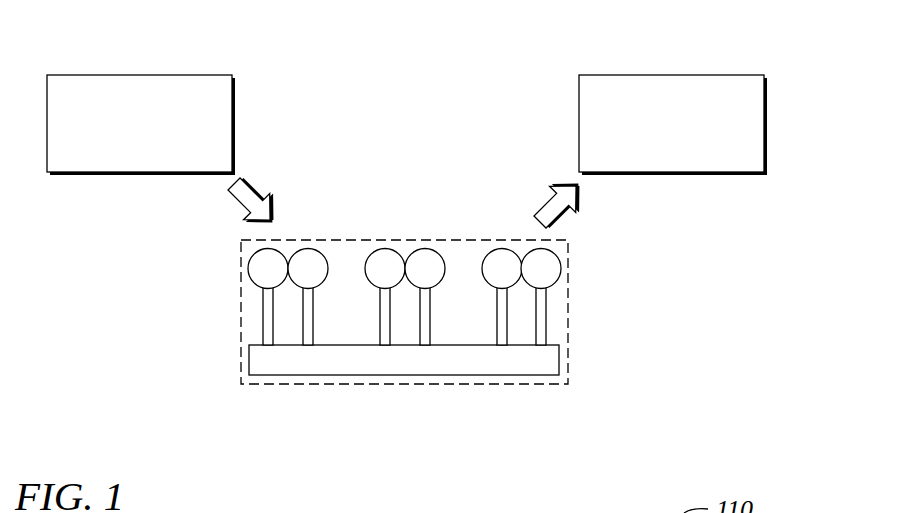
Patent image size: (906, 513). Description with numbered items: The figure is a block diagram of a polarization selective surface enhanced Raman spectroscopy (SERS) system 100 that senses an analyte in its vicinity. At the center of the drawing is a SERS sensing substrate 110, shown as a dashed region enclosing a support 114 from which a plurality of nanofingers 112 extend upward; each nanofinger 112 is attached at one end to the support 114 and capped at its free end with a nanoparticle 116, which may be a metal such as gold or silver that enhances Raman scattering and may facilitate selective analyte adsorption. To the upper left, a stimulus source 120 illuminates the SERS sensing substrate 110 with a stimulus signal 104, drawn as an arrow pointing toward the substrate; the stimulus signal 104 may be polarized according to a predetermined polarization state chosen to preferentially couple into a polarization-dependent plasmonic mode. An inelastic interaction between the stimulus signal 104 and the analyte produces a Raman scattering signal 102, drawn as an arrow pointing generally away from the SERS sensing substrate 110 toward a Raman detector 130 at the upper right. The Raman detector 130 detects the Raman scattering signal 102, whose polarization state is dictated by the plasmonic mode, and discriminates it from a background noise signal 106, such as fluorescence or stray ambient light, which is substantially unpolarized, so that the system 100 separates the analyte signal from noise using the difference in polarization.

The polarization selective surface enhanced Raman spectroscopy (SERS) system 100 is at (675, 36).
The Raman scattering signal 102 is at (558, 186).
The stimulus signal 104 is at (253, 186).
The background noise signal 106 is at (502, 224).
The SERS sensing substrate 110 is at (567, 310).
The nanofingers 112 is at (267, 309).
The support 114 is at (253, 361).
The nanoparticle 116 is at (253, 271).
The stimulus source 120 is at (212, 77).
The Raman detector 130 is at (598, 77).